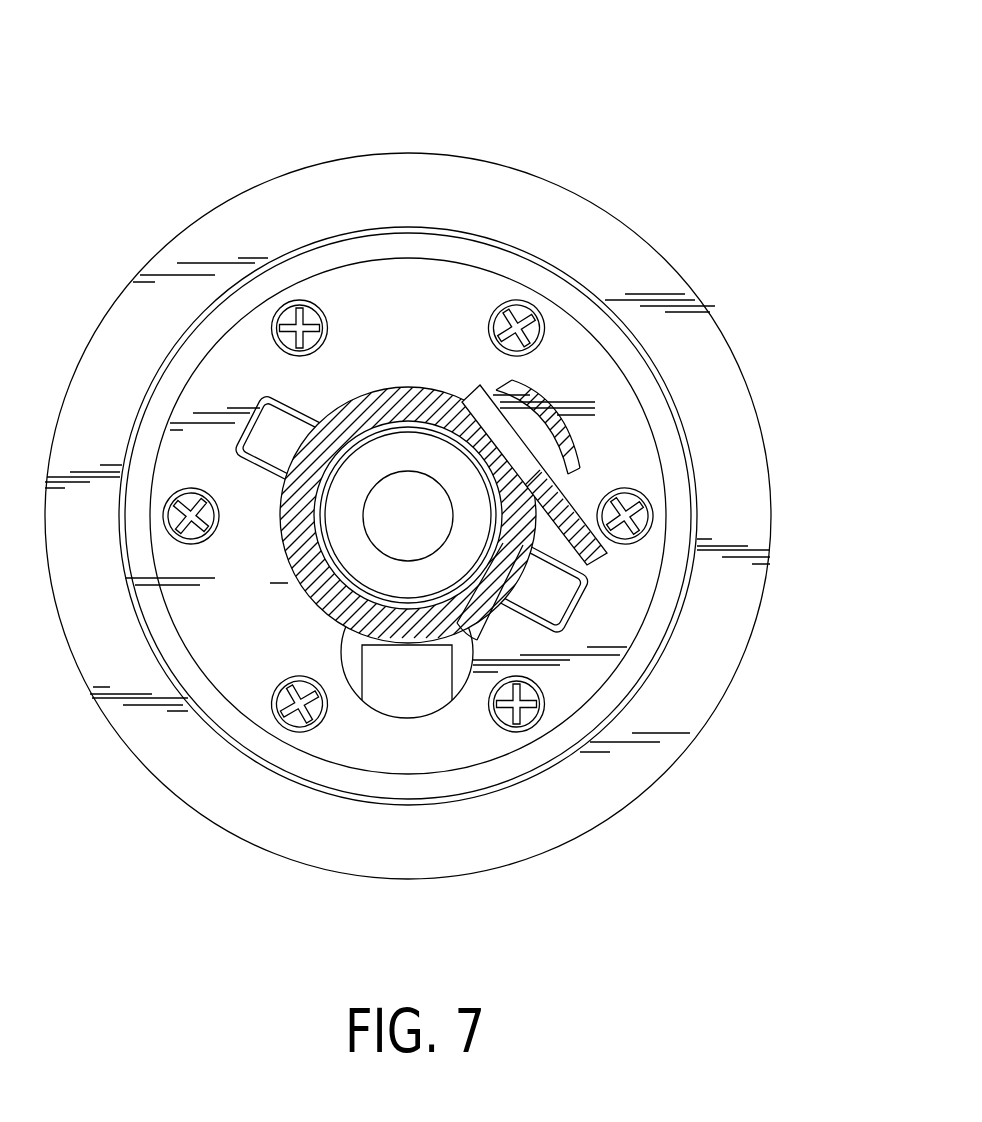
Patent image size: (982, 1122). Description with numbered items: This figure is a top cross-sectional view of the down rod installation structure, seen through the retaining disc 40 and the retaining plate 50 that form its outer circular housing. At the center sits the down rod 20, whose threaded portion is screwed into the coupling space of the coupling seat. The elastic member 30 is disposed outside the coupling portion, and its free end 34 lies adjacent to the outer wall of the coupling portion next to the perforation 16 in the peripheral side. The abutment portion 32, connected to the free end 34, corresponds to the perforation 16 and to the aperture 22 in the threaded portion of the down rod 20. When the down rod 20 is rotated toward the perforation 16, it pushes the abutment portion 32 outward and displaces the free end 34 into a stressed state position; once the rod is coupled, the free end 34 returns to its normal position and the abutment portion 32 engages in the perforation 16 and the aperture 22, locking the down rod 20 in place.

The perforation 16 is at (505, 438).
The down rod 20 is at (357, 438).
The aperture 22 is at (412, 598).
The elastic member 30 is at (576, 452).
The abutment portion 32 is at (535, 500).
The free end 34 is at (528, 436).
The retaining disc 40 is at (496, 157).
The retaining plate 50 is at (427, 254).